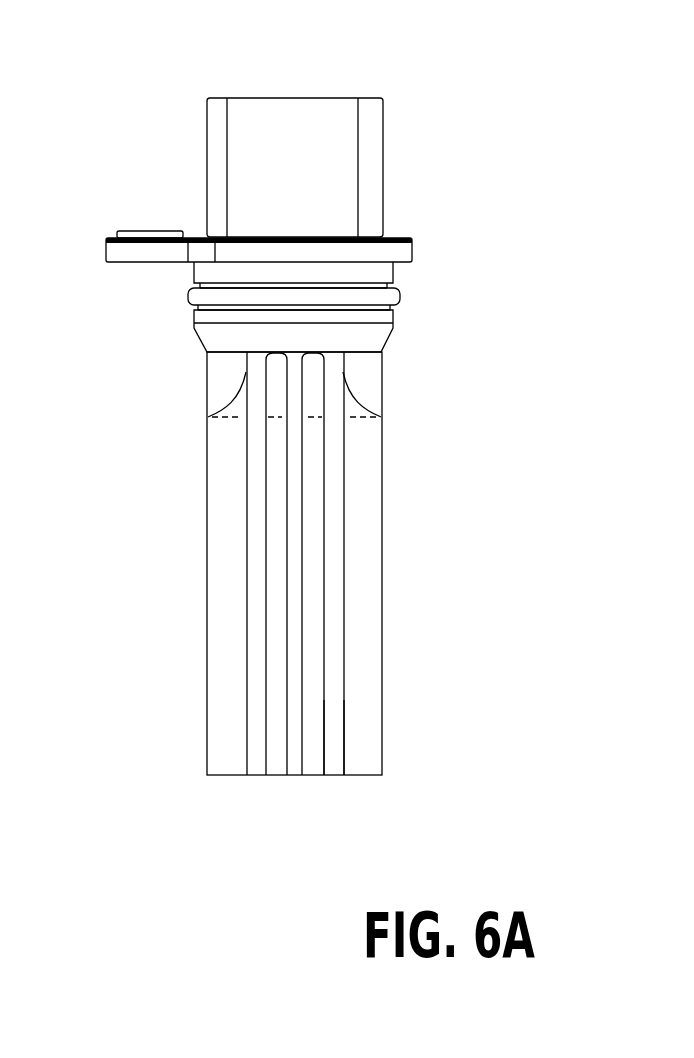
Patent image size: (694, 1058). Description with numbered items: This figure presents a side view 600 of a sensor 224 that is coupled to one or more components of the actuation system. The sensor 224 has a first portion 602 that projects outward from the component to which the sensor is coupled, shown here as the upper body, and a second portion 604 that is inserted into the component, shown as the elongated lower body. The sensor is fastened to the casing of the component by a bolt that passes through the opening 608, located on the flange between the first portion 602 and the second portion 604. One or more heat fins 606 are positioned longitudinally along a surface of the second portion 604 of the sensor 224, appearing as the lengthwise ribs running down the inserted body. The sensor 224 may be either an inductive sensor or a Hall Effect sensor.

The side view 600 is at (470, 118).
The sensor 224 is at (470, 268).
The first portion 602 is at (227, 172).
The second portion 604 is at (367, 628).
The heat fins 606 is at (333, 762).
The opening 608 is at (135, 232).